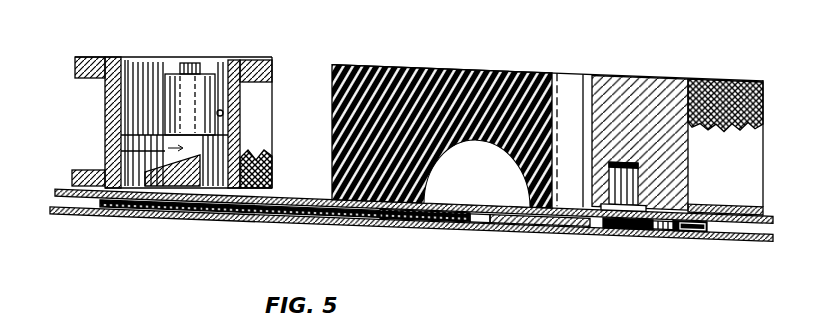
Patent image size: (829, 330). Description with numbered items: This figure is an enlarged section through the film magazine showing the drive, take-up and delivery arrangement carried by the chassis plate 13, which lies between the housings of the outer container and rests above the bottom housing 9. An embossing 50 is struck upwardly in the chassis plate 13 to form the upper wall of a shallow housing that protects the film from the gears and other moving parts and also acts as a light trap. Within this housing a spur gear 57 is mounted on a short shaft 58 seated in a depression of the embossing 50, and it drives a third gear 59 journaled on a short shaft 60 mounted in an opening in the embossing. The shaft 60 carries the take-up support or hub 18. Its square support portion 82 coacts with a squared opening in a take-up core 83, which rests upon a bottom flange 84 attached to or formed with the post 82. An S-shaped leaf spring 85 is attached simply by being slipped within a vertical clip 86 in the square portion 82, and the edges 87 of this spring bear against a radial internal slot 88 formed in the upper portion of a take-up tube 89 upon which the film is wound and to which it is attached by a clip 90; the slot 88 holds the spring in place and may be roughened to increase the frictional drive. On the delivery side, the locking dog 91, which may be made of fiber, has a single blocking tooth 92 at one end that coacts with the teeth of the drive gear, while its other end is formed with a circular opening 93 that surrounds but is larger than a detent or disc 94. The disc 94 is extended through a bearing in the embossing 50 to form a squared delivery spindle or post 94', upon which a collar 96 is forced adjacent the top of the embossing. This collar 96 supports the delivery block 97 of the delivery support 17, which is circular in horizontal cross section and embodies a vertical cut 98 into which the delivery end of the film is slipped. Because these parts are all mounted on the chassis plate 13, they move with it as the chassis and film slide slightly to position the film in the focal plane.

The bottom housing 9 is at (718, 243).
The chassis member or plate 13 is at (296, 197).
The delivery support 17 is at (654, 73).
The take-up support or hub 18 is at (220, 56).
The embossing 50 is at (481, 200).
The spur gear 57 is at (412, 231).
The short shaft 58 is at (430, 136).
The third gear 59 is at (231, 222).
The short shaft 60 is at (176, 222).
The square support portion 82 is at (105, 151).
The take-up core 83 is at (140, 142).
The bottom flange 84 is at (100, 175).
The S-shaped leaf spring 85 is at (143, 82).
The vertical clip 86 is at (177, 70).
The edges of spring 87 is at (240, 102).
The radial internal slot 88 is at (223, 113).
The take-up tube 89 is at (105, 100).
The clip 90 is at (105, 84).
The dog 91 is at (527, 230).
The blocking tooth 92 is at (474, 228).
The circular opening 93 is at (670, 240).
The detent or disc 94 is at (655, 253).
The squared delivery spindle or post 94' is at (703, 187).
The collar 96 is at (692, 203).
The delivery block 97 is at (688, 138).
The vertical cut 98 is at (593, 88).